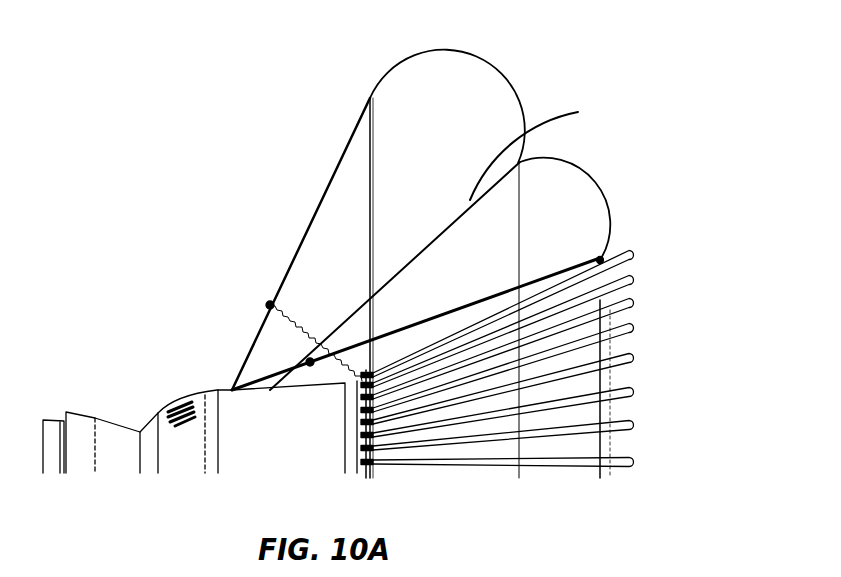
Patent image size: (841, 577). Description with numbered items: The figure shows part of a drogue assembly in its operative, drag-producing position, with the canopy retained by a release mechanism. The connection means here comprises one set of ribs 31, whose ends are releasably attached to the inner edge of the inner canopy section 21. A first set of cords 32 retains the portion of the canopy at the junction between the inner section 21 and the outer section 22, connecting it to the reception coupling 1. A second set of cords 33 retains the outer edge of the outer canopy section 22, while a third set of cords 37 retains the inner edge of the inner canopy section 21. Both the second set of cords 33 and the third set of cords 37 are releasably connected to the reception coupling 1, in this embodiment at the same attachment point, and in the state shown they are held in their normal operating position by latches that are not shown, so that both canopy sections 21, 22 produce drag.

The reception coupling 1 is at (260, 439).
The inner canopy section 21 is at (598, 182).
The outer canopy section 22 is at (485, 63).
The ribs 31 is at (603, 362).
The first set of cords 32 is at (445, 241).
The second set of cords 33 is at (333, 177).
The third set of cords 37 is at (492, 293).